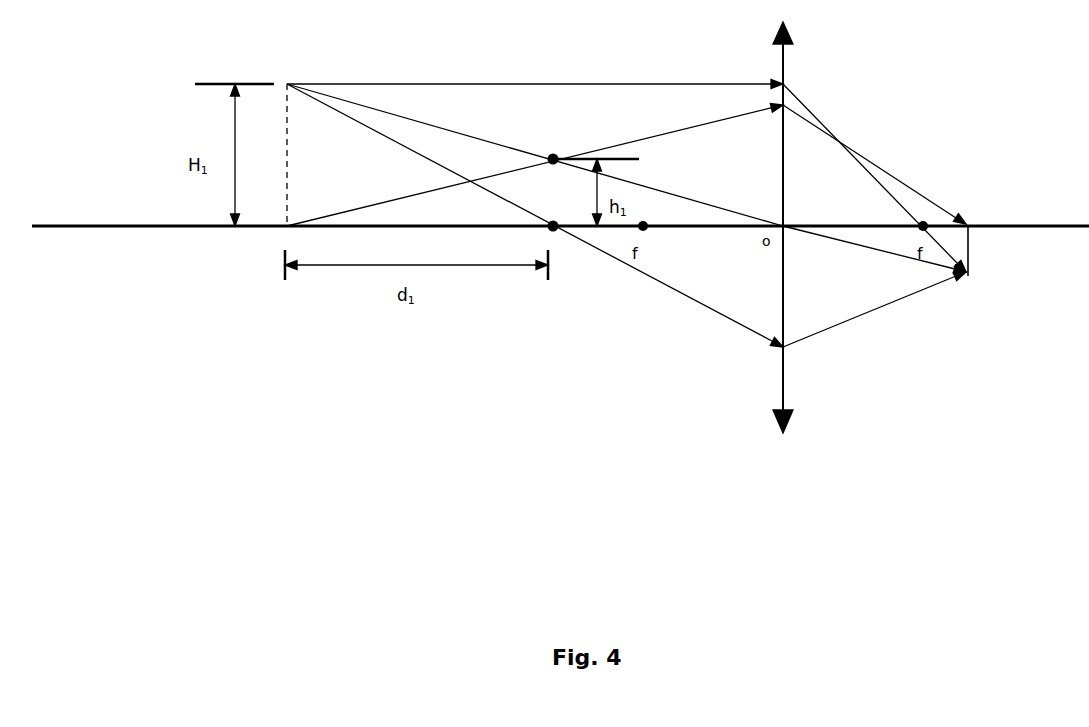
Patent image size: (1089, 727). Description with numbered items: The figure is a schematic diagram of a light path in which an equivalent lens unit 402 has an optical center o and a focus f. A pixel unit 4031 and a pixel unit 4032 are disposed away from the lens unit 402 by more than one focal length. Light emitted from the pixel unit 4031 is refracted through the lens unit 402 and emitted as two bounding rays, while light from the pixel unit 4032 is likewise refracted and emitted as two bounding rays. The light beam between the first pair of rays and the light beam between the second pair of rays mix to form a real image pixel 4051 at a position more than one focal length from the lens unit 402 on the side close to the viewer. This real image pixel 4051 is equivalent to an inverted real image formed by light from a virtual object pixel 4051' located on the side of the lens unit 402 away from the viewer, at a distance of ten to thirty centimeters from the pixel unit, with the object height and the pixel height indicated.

The equivalent lens unit 402 is at (787, 60).
The pixel unit 4031 is at (553, 154).
The pixel unit 4032 is at (554, 232).
The real image pixel 4051 is at (1010, 251).
The virtual object pixel 4051' is at (286, 155).